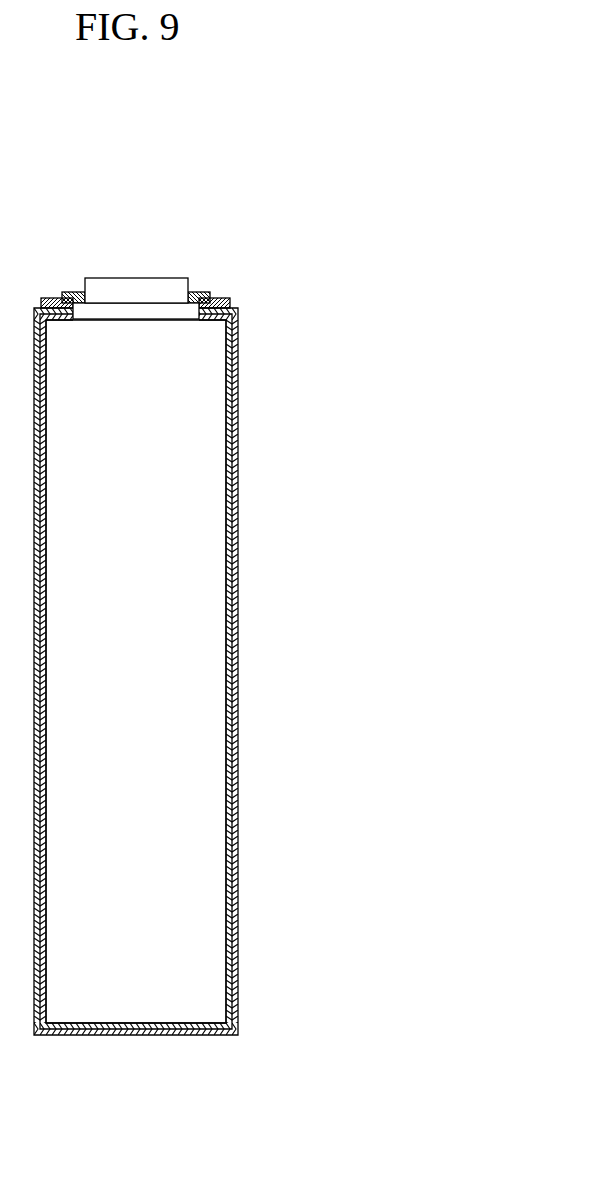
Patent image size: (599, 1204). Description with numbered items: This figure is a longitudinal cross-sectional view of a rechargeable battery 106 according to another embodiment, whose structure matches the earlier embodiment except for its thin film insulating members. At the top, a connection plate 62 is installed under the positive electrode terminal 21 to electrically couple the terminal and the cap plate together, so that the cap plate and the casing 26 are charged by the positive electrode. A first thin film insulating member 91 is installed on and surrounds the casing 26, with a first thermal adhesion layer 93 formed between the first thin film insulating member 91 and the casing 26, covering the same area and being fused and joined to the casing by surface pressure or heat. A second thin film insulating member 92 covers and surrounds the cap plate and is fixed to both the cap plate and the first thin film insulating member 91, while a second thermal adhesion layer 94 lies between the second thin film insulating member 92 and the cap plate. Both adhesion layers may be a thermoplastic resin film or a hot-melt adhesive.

The rechargeable battery 106 is at (155, 176).
The casing 26 is at (162, 671).
The first thin film insulating member 91 is at (235, 520).
The first thermal adhesion layer 93 is at (232, 578).
The second thermal adhesion layer 94 is at (227, 301).
The second thin film insulating member 92 is at (197, 296).
The connection plate 62 is at (115, 310).
The positive electrode terminal 21 is at (157, 290).